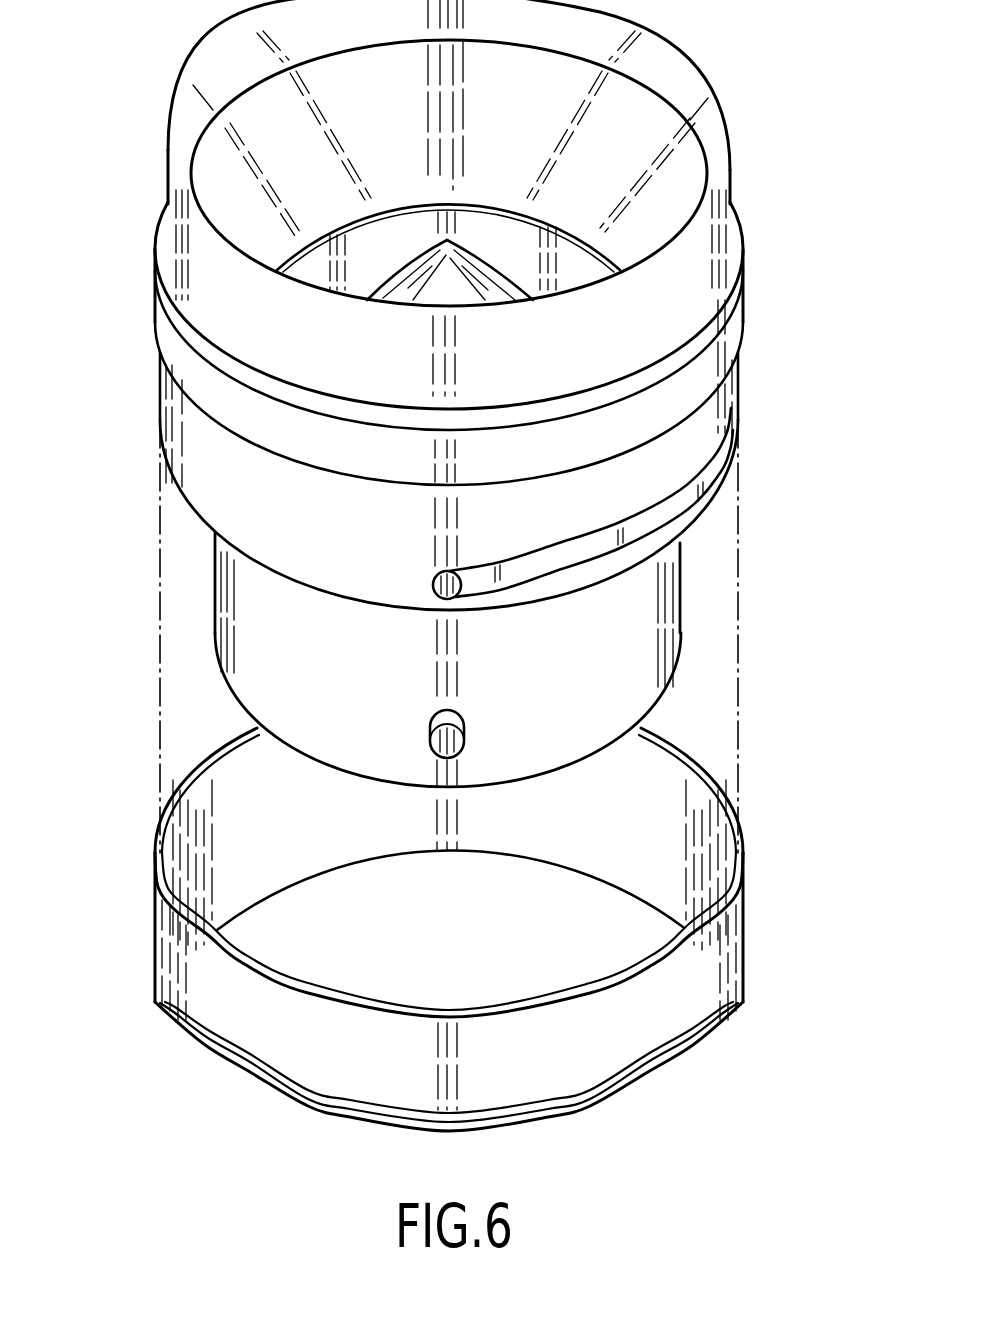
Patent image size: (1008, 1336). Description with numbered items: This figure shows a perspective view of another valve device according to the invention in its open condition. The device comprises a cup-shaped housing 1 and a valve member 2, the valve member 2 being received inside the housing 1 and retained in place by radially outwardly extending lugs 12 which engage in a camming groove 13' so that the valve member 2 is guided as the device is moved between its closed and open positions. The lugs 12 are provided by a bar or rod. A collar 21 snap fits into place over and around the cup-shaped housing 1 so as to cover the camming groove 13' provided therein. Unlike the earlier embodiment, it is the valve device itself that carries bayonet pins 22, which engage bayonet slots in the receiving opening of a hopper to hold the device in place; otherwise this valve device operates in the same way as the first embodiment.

The housing 1 is at (205, 450).
The valve member 2 is at (653, 652).
The lugs 12 is at (433, 582).
The camming groove 13' is at (677, 502).
The collar 21 is at (165, 956).
The bayonet pins 22 is at (430, 733).